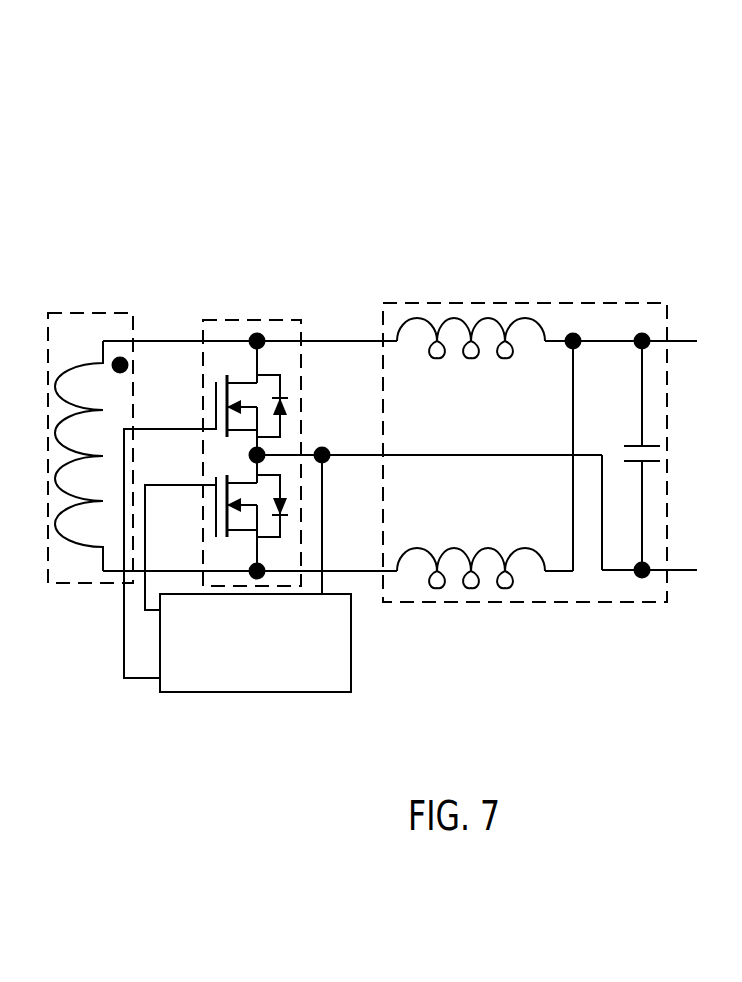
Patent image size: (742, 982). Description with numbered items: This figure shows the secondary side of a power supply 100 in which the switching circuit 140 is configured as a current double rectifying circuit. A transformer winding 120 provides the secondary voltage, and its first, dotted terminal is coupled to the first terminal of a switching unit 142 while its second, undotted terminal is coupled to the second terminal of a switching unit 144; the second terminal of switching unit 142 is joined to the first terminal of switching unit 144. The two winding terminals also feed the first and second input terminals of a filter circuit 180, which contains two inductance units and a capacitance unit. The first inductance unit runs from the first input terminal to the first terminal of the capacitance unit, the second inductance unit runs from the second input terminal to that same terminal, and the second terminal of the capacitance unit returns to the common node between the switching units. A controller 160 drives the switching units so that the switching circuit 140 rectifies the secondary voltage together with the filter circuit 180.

The power supply 100 is at (154, 70).
The transformer winding 120 is at (114, 312).
The switching circuit 140 is at (276, 319).
The switching unit 142 is at (280, 423).
The switching unit 144 is at (280, 520).
The controller 160 is at (329, 659).
The filter circuit 180 is at (521, 302).